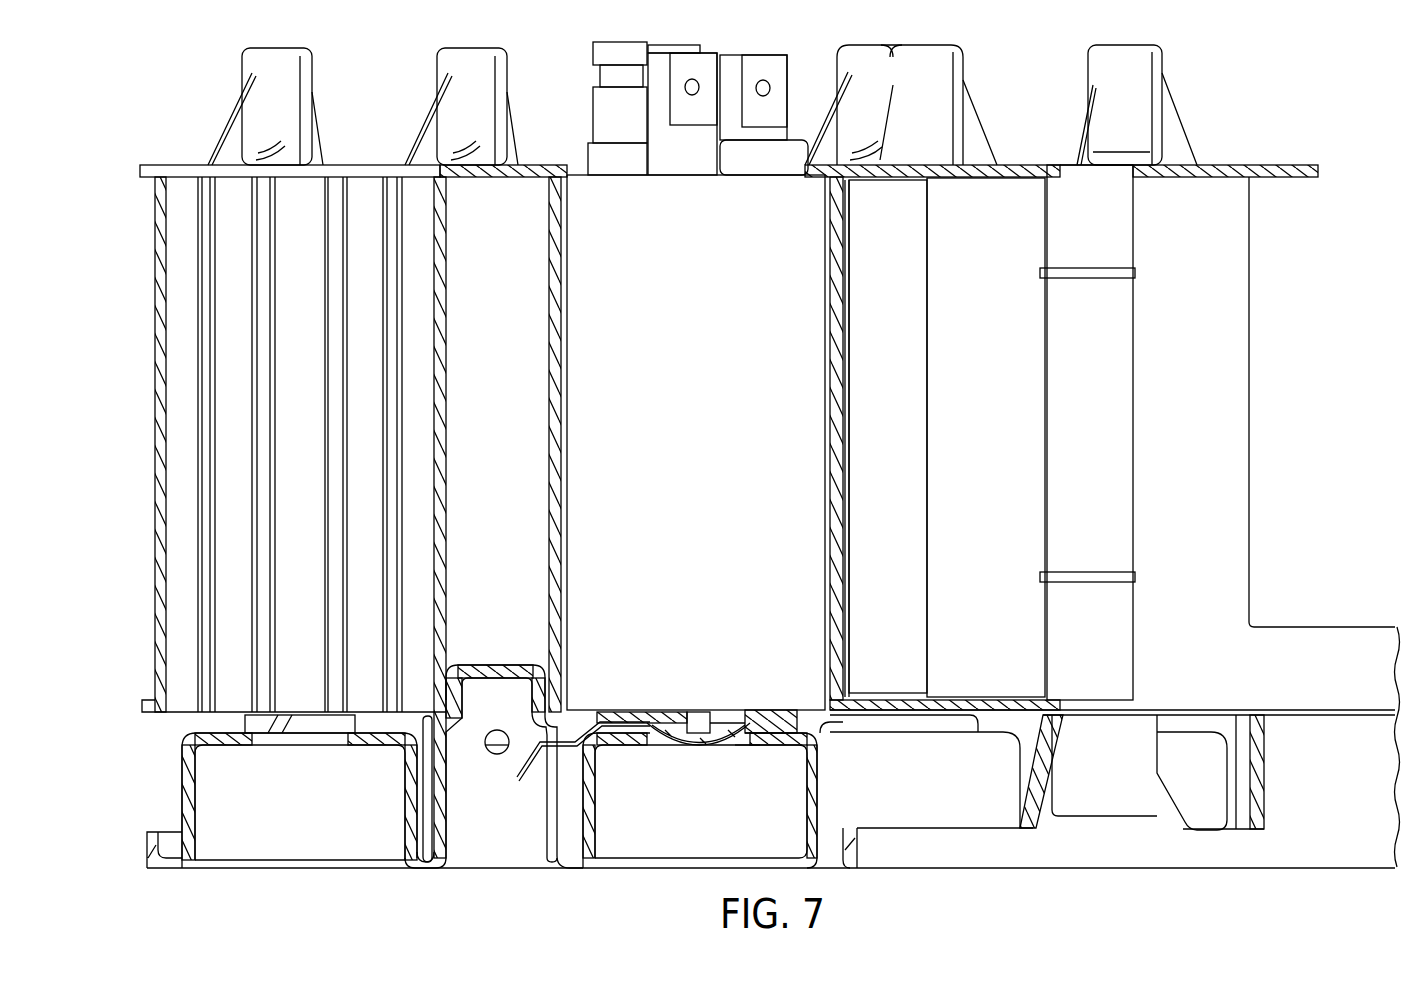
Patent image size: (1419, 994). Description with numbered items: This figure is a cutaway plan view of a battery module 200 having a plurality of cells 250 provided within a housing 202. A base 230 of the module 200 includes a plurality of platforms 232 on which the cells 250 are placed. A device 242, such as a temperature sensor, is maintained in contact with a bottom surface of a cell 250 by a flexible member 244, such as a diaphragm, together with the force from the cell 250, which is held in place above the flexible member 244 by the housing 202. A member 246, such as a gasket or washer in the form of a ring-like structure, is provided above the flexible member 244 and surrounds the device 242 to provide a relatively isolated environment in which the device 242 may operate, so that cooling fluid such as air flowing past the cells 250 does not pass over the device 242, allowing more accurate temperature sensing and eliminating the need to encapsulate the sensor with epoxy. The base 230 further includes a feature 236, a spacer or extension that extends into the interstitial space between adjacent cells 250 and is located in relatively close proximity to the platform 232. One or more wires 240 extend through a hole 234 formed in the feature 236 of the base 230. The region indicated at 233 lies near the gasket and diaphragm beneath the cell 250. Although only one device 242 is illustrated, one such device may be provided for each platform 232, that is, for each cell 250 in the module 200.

The battery module 200 is at (1262, 80).
The housing 202 is at (1236, 417).
The base 230 is at (425, 865).
The platform 232 is at (583, 808).
The opening 233 is at (740, 760).
The hole 234 is at (533, 737).
The feature 236 is at (503, 672).
The wires 240 is at (525, 773).
The device 242 is at (698, 717).
The flexible member 244 is at (693, 742).
The member 246 is at (762, 713).
The cell 250 is at (719, 407).